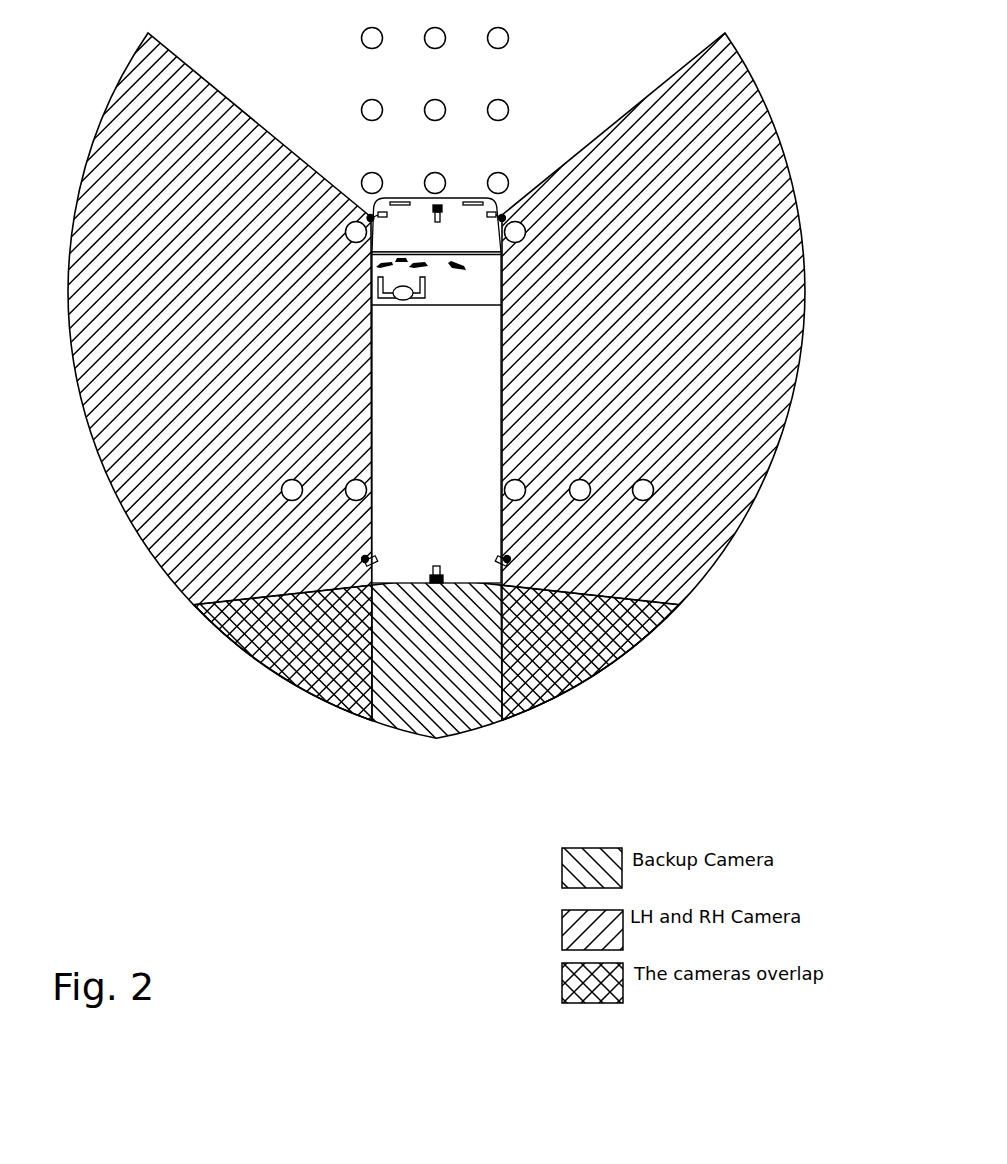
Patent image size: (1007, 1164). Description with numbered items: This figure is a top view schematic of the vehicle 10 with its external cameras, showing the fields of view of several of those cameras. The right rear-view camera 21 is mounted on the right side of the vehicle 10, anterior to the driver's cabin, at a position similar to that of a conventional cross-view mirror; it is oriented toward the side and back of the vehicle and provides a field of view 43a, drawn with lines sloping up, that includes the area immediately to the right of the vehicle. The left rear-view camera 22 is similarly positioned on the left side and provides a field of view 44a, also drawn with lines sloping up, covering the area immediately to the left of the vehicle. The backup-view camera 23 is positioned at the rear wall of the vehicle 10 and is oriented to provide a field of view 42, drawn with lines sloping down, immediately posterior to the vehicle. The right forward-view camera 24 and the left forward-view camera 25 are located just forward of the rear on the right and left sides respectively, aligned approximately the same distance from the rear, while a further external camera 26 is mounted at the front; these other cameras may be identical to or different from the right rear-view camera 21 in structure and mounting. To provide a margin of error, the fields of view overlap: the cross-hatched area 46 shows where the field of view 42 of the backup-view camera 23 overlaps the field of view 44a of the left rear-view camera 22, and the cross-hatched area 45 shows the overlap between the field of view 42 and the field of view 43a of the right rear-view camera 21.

The vehicle 10 is at (428, 468).
The right rear-view camera 21 is at (503, 213).
The left rear-view camera 22 is at (371, 216).
The backup-view camera 23 is at (433, 585).
The right forward-view camera 24 is at (508, 560).
The left forward-view camera 25 is at (363, 566).
The external camera 26 is at (433, 206).
The field of view 42 is at (483, 712).
The field of view 43a is at (710, 548).
The field of view 44a is at (208, 587).
The cross-hatched area 45 is at (535, 707).
The cross-hatched area 46 is at (256, 632).